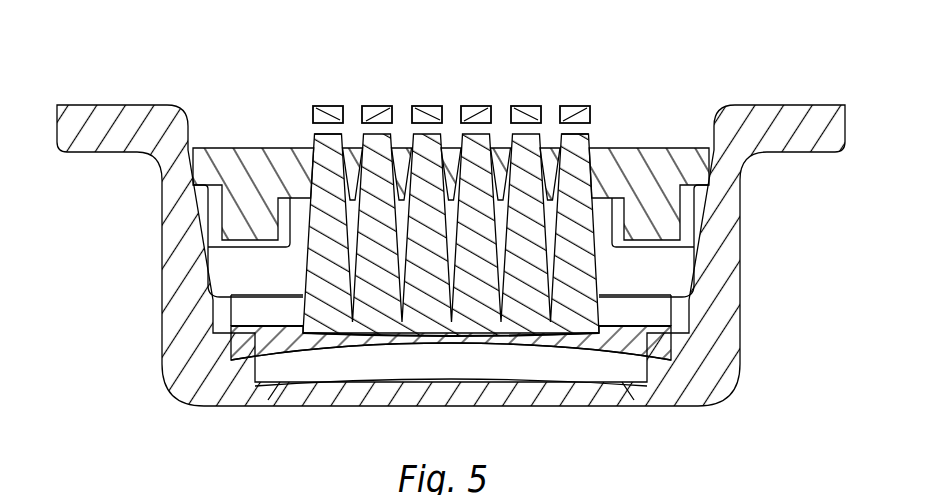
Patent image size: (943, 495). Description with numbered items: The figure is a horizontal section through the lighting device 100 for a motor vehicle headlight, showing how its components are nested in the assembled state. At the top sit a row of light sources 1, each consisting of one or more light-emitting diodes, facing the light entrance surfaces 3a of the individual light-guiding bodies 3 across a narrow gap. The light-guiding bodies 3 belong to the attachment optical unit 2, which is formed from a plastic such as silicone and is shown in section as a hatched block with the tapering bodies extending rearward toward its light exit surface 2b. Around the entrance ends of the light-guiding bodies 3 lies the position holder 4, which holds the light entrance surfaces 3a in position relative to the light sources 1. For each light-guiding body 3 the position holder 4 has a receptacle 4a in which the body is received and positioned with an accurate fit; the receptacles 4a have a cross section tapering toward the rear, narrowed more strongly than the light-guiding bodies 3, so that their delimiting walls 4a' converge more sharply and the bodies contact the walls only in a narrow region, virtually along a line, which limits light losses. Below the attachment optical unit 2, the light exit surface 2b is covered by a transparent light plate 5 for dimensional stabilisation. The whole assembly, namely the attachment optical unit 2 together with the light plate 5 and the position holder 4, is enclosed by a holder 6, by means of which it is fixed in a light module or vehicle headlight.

The lighting device 100 is at (127, 70).
The light source 1 is at (323, 100).
The attachment optical unit 2 is at (300, 238).
The light exit surface 2b is at (533, 335).
The light-guiding body 3 is at (297, 264).
The light entrance surface 3a is at (477, 133).
The position holder 4 is at (263, 167).
The receptacle 4a is at (416, 133).
The delimiting wall 4a' is at (386, 176).
The light plate 5 is at (330, 342).
The holder 6 is at (722, 323).